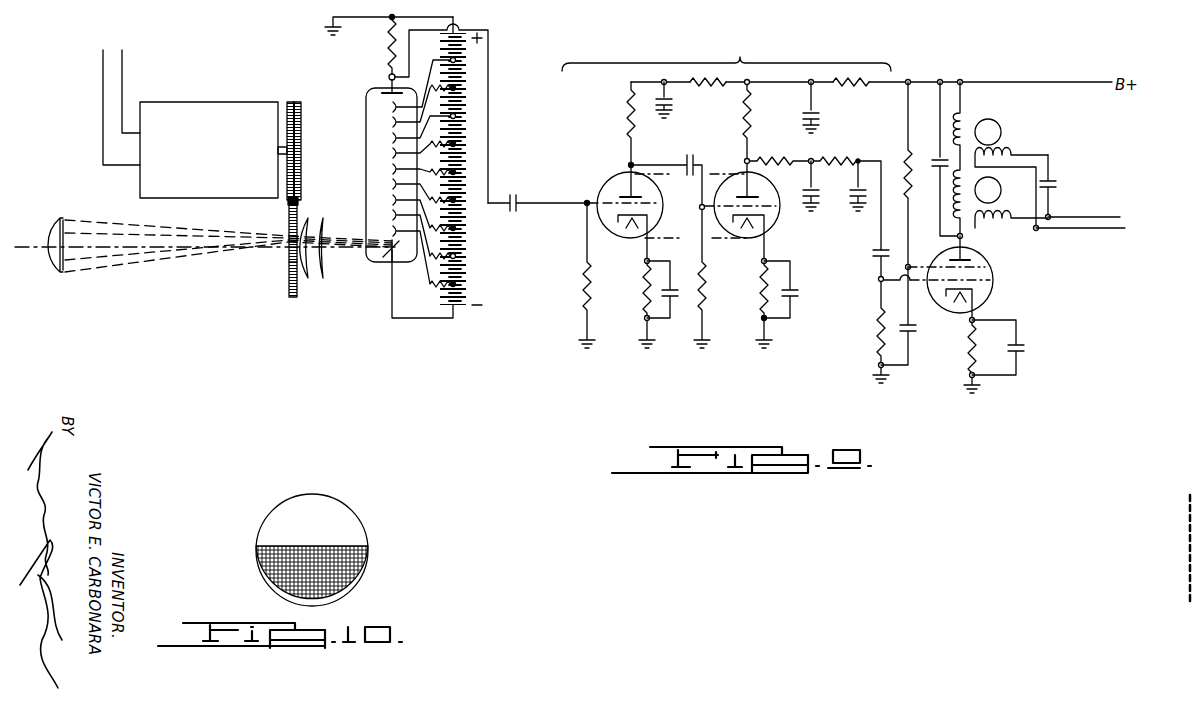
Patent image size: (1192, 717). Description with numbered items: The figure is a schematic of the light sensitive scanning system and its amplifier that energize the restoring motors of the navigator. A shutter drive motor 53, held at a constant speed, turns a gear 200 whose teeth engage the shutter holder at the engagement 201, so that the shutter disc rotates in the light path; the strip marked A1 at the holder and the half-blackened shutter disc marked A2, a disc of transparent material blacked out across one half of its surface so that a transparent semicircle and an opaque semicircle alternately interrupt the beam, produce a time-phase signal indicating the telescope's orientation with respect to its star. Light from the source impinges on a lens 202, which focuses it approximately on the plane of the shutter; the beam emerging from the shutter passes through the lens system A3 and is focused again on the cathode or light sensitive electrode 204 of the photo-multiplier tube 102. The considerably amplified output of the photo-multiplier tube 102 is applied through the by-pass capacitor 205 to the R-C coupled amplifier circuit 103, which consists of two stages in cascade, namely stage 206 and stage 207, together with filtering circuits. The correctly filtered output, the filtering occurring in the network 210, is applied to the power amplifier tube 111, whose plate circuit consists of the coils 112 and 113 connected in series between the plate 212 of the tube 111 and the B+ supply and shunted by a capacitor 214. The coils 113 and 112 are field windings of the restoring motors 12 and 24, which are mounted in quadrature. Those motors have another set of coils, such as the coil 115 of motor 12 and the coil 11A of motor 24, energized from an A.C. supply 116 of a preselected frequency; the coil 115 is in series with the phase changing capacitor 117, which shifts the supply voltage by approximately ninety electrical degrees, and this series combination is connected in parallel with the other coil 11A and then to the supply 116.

In FIG. 9, the shutter drive motor 53 is at (214, 103).
In FIG. 9, the gear 200 is at (302, 106).
In FIG. 9, the teeth engagement 201 is at (300, 209).
In FIG. 9, the lens 202 is at (52, 272).
In FIG. 9, the aperture strip A1 is at (288, 277).
In FIG. 9, the field lenses A3 is at (307, 279).
In FIG. 9, the photo-multiplier tube 102 is at (367, 130).
In FIG. 9, the cathode or light sensitive electrode 204 is at (398, 255).
In FIG. 9, the by-pass capacitor 205 is at (515, 213).
In FIG. 9, the amplifier circuit 103 is at (726, 55).
In FIG. 9, the first amplifier stage 206 is at (616, 237).
In FIG. 9, the second amplifier stage 207 is at (727, 238).
In FIG. 9, the filtering network 210 is at (810, 206).
In FIG. 9, the capacitor 214 is at (922, 175).
In FIG. 9, the field winding coil 112 is at (956, 205).
In FIG. 9, the field winding coil 113 is at (962, 114).
In FIG. 9, the restoring motor 12 is at (1000, 128).
In FIG. 9, the motor coil 115 is at (1006, 152).
In FIG. 9, the phase changing capacitor 117 is at (1055, 184).
In FIG. 9, the restoring motor 24 is at (997, 188).
In FIG. 9, the secondary winding 11A is at (1008, 225).
In FIG. 9, the A.C. supply 116 is at (1098, 227).
In FIG. 9, the plate 212 is at (966, 262).
In FIG. 9, the power amplifier tube 111 is at (995, 287).
In FIG. 10, the half-shaded disc A2 is at (372, 532).